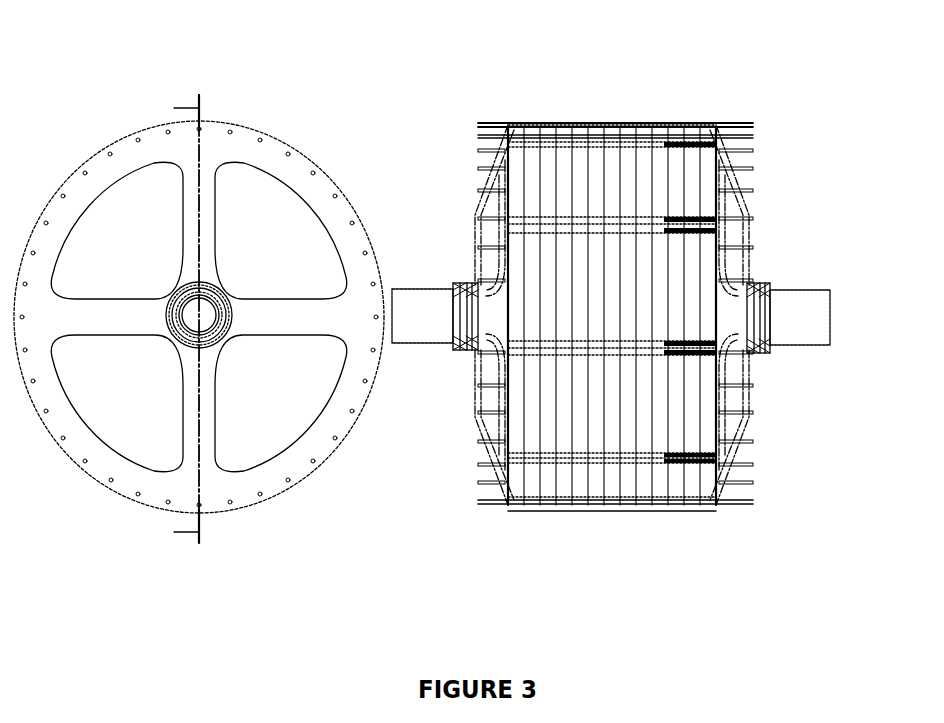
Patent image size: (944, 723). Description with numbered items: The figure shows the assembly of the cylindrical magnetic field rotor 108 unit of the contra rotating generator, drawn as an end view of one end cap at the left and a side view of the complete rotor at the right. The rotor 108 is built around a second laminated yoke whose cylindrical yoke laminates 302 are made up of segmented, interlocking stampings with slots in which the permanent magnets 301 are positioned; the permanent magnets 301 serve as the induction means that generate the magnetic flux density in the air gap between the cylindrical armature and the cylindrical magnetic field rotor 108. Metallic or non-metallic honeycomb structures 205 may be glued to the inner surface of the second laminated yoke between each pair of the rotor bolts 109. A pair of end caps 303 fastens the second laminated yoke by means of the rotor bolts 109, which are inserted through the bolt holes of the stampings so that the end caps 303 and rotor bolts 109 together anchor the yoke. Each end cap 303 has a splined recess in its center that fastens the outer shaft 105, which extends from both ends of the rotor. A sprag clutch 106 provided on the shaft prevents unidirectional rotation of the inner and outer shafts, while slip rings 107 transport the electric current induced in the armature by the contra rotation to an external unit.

The outer shaft 105 is at (815, 278).
The sprag clutch 106 is at (775, 269).
The slip rings 107 is at (451, 270).
The cylindrical magnetic field rotor 108 is at (553, 113).
The rotor bolts 109 is at (763, 451).
The honeycomb structures 205 is at (714, 110).
The permanent magnets 301 is at (663, 210).
The cylindrical yoke laminates 302 is at (569, 494).
The end caps 303 is at (57, 427).